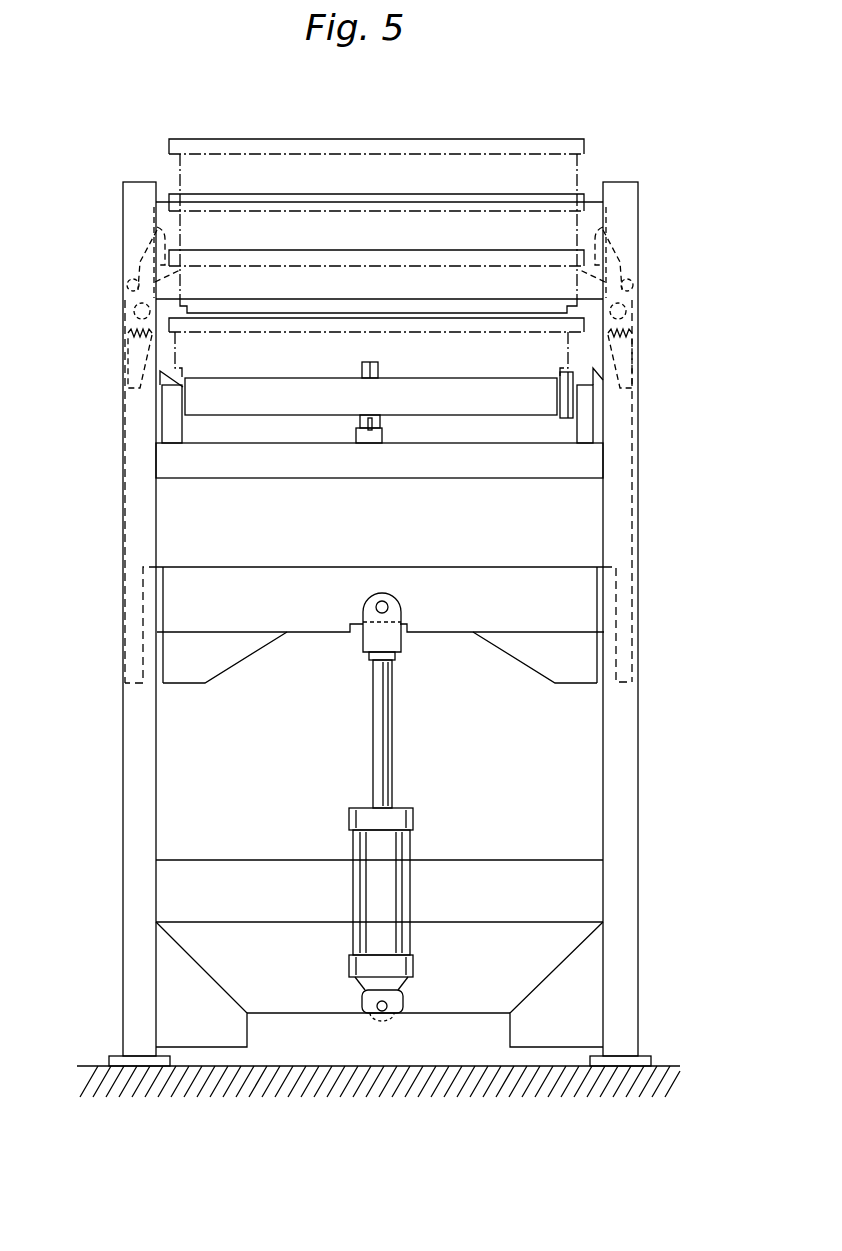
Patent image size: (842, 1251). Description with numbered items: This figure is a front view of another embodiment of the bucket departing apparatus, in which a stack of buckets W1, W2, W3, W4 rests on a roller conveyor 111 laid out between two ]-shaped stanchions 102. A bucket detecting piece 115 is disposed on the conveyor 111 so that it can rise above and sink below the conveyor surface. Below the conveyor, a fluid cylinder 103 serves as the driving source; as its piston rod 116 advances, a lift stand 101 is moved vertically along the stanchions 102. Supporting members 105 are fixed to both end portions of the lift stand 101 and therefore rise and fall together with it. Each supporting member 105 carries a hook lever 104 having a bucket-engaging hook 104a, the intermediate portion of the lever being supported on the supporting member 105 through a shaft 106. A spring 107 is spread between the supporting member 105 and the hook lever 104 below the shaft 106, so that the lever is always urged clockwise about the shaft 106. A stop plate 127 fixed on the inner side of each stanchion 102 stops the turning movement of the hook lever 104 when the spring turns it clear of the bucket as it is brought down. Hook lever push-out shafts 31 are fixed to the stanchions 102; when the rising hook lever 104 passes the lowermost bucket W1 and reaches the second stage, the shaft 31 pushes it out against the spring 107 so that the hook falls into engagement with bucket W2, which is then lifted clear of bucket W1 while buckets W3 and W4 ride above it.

The lift stand 101 is at (339, 580).
The stanchions 102 is at (152, 783).
The fluid cylinder 103 is at (394, 850).
The hook lever 104 is at (132, 267).
The bucket-engaging hook 104a is at (157, 227).
The supporting member 105 is at (128, 556).
The shaft 106 is at (126, 311).
The spring 107 is at (124, 345).
The roller conveyor 111 is at (499, 407).
The bucket detecting piece 115 is at (370, 368).
The piston rod 116 is at (384, 728).
The stop plate 127 is at (160, 423).
The hook lever push-out shaft 31 is at (125, 284).
The lowermost bucket W1 is at (297, 367).
The bucket W2 is at (297, 298).
The bucket W3 is at (297, 245).
The bucket W4 is at (297, 187).